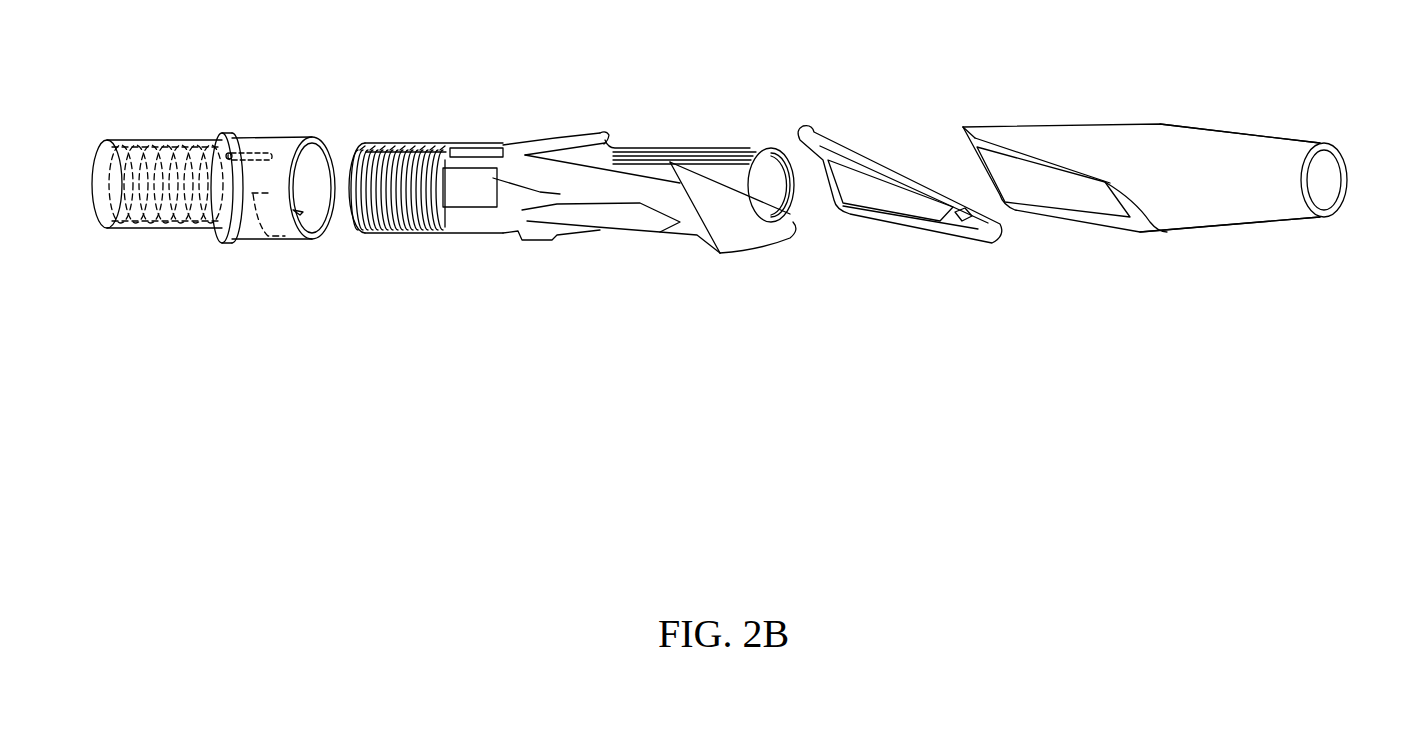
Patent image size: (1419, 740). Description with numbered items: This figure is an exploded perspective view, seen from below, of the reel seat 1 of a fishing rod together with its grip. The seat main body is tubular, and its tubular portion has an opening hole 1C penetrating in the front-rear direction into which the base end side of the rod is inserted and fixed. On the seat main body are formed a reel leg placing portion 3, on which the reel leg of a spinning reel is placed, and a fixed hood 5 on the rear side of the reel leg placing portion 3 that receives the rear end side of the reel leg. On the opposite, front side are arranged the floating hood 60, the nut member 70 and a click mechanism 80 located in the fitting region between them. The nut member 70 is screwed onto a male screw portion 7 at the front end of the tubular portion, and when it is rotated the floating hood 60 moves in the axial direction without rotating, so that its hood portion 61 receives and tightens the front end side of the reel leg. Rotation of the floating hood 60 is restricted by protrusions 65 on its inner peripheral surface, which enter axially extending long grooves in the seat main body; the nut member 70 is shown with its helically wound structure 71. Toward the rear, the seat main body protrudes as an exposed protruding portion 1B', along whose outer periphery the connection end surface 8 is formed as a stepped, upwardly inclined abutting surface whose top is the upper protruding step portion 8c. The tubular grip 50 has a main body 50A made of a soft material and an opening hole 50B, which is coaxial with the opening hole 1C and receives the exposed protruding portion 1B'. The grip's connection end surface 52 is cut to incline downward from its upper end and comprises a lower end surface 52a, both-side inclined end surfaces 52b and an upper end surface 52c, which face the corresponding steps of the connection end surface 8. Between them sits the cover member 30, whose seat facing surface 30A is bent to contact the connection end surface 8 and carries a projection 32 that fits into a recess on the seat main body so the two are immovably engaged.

The reel seat 1 is at (721, 104).
The exposed protruding portion 1B' is at (760, 159).
The opening hole 1C is at (789, 196).
The reel leg placing portion 3 is at (610, 217).
The fixed hood 5 is at (742, 237).
The male screw portion 7 is at (411, 146).
The connection end surface 8 is at (660, 155).
The upper protruding step portion 8c is at (608, 137).
The cover member 30 is at (903, 243).
The seat facing surface 30A is at (874, 176).
The projection 32 is at (963, 223).
The grip 50 is at (1279, 127).
The main body 50A is at (1242, 205).
The opening hole 50B is at (1323, 182).
The connection end surface 52 is at (1142, 213).
The lower end surface 52a is at (1157, 223).
The both-side inclined end surfaces 52b is at (1062, 217).
The upper end surface 52c is at (987, 170).
The floating hood 60 is at (287, 127).
The hood portion 61 is at (282, 237).
The protrusions 65 is at (259, 152).
The nut member 70 is at (133, 233).
The coil of spring 71 is at (168, 224).
The click mechanism 80 is at (240, 242).